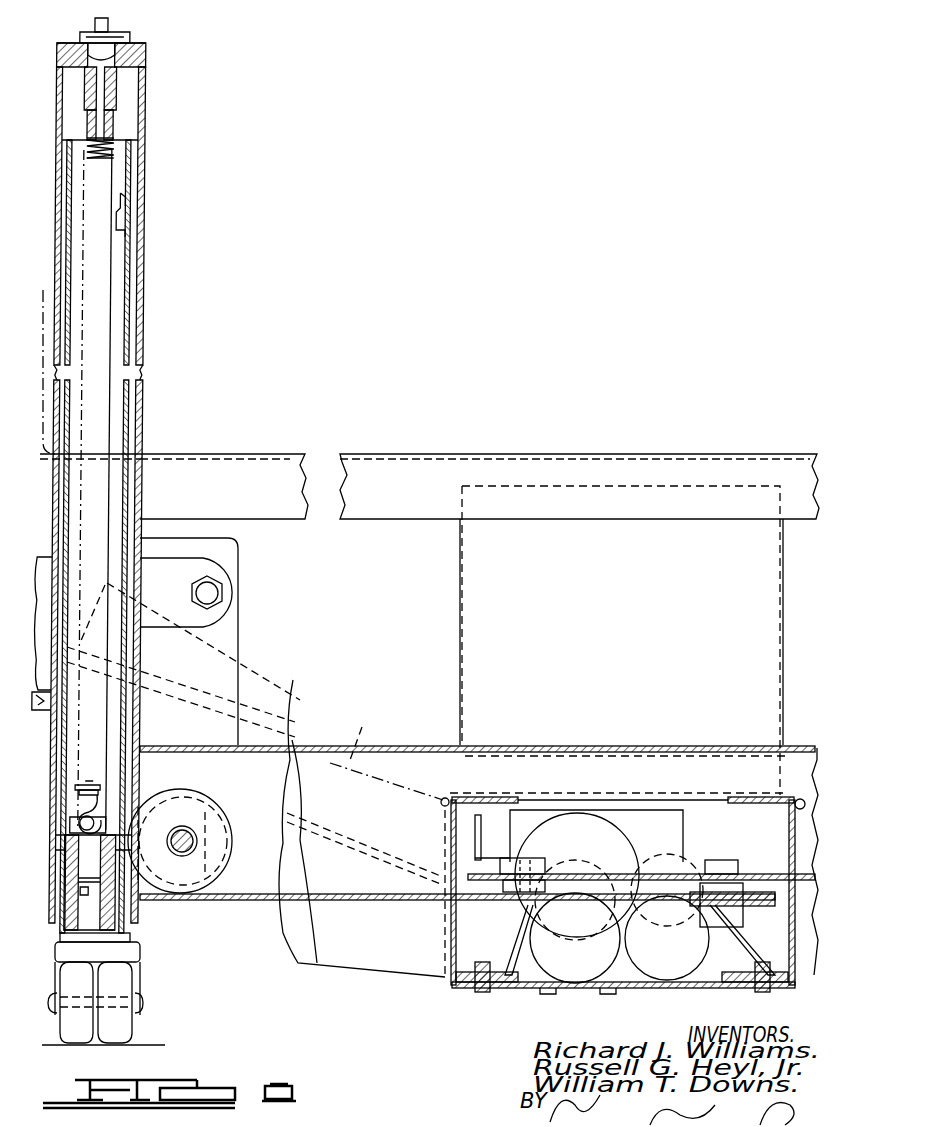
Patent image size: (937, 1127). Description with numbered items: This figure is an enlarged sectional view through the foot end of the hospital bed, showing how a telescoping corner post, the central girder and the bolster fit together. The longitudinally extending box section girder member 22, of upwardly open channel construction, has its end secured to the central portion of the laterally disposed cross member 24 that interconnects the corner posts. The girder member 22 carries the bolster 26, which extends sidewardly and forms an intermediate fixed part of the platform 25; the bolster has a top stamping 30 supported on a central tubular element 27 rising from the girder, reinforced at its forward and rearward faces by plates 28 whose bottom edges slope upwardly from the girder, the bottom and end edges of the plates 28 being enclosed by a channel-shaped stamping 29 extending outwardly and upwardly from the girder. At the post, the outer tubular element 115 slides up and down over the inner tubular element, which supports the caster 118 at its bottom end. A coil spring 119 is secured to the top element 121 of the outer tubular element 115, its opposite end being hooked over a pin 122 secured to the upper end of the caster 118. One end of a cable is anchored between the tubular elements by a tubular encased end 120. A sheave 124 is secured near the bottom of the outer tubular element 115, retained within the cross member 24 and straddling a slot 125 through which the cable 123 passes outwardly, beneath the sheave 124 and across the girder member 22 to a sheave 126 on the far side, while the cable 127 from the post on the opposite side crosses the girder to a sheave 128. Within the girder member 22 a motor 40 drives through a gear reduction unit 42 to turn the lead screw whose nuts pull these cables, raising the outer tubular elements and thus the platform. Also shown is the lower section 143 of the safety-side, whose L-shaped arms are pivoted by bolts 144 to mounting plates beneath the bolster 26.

The top element 121 is at (143, 45).
The coil spring 119 is at (116, 152).
The tubular encased end 120 is at (124, 200).
The outer tubular element 115 is at (146, 262).
The cable 123 is at (146, 306).
The channel-shaped stamping 29 is at (147, 421).
The platform 25 is at (270, 453).
The bolster 26 is at (349, 537).
The top stamping 30 is at (572, 455).
The central tubular element 27 is at (785, 583).
The plates 28 is at (408, 607).
The lower section 143 is at (208, 545).
The bolts 144 is at (218, 591).
The pin 122 is at (110, 812).
The sheave 124 is at (216, 814).
The slot 125 is at (138, 918).
The caster 118 is at (138, 952).
The cross member 24 is at (260, 917).
The sheave 128 is at (450, 904).
The motor 40 is at (562, 820).
The gear reduction unit 42 is at (630, 815).
The girder member 22 is at (790, 832).
The cable 127 is at (800, 871).
The sheave 126 is at (714, 907).